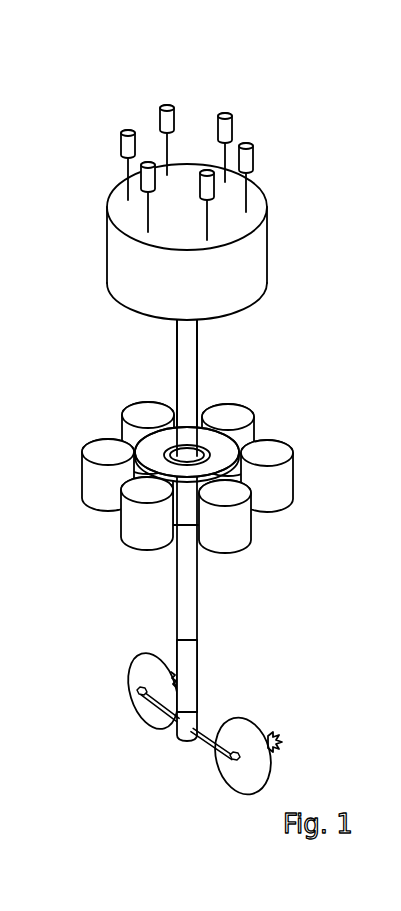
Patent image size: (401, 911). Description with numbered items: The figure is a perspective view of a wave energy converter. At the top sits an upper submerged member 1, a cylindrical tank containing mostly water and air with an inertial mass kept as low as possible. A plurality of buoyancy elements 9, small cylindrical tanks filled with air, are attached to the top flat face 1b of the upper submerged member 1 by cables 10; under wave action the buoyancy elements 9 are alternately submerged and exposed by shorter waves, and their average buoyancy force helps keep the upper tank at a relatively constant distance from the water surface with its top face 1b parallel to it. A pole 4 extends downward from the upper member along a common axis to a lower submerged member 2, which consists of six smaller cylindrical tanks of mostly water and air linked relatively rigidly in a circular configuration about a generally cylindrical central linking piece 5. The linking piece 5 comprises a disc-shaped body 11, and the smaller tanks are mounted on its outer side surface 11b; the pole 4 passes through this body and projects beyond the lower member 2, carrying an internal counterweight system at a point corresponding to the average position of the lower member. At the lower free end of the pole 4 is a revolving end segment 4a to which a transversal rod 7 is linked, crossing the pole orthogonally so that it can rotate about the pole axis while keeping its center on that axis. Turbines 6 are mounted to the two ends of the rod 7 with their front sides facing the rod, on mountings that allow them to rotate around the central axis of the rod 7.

The upper submerged member 1 is at (187, 242).
The top flat face 1b is at (118, 212).
The lower submerged member 2 is at (185, 456).
The pole 4 is at (193, 638).
The revolving end segment 4a is at (183, 744).
The central linking piece 5 is at (217, 424).
The turbines 6 is at (137, 667).
The transversal rod 7 is at (210, 742).
The buoyancy elements 9 is at (151, 165).
The cables 10 is at (125, 185).
The disc-shaped body 11 is at (141, 442).
The outer side surface 11b is at (188, 508).